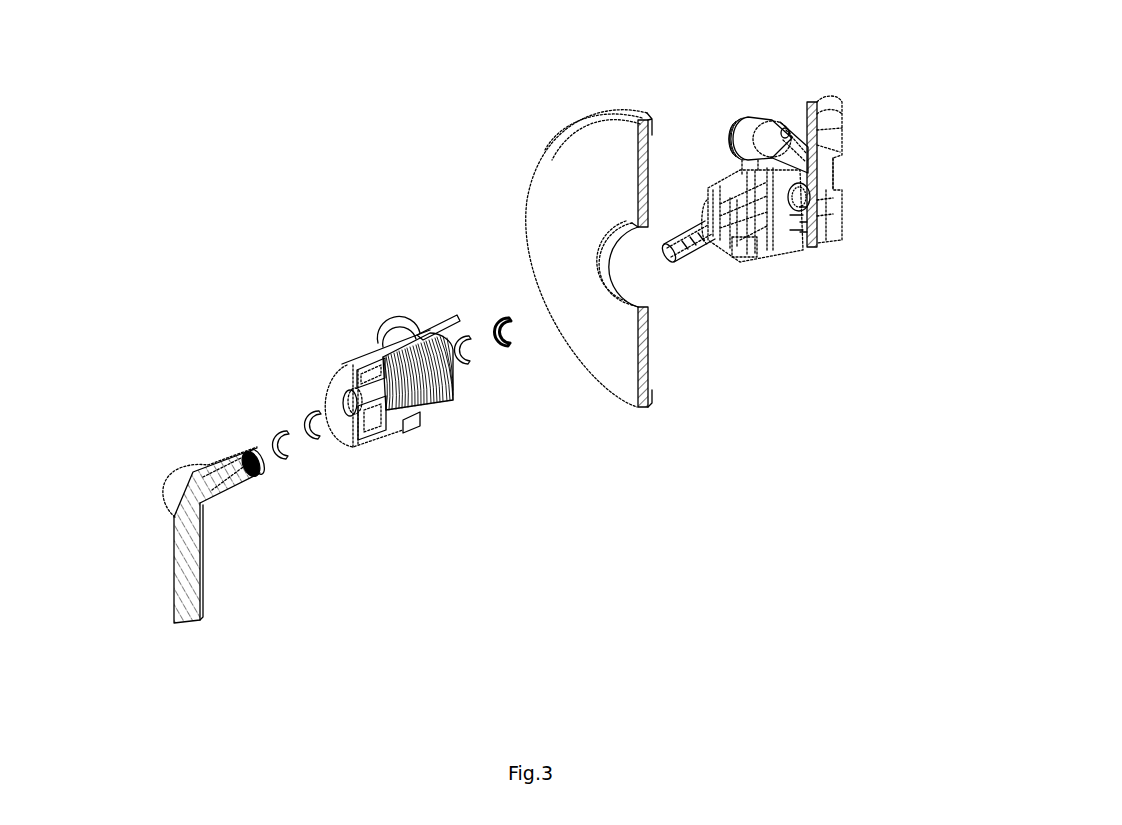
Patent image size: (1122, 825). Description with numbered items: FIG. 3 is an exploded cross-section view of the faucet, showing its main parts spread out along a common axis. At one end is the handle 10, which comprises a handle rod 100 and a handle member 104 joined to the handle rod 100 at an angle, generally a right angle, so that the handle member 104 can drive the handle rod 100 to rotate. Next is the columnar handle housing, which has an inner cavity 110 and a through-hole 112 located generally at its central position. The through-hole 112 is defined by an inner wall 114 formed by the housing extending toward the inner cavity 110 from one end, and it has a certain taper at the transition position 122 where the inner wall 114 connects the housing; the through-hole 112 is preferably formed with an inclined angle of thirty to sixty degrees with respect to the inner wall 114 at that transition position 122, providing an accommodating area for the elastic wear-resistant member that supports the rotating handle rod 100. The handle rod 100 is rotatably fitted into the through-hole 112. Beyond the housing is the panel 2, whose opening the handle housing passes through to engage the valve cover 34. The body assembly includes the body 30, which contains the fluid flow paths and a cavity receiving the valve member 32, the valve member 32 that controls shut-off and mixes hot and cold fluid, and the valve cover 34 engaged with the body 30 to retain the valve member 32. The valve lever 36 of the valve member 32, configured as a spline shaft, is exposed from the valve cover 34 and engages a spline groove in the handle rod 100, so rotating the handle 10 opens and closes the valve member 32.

The panel 2 is at (543, 197).
The handle 10 is at (113, 471).
The handle rod 100 is at (228, 458).
The handle member 104 is at (190, 580).
The inner cavity 110 is at (402, 377).
The through-hole 112 is at (360, 407).
The inner wall 114 is at (370, 390).
The transition position 122 is at (343, 403).
The body 30 is at (832, 118).
The valve member 32 is at (770, 220).
The valve cover 34 is at (763, 167).
The valve lever 36 is at (710, 230).